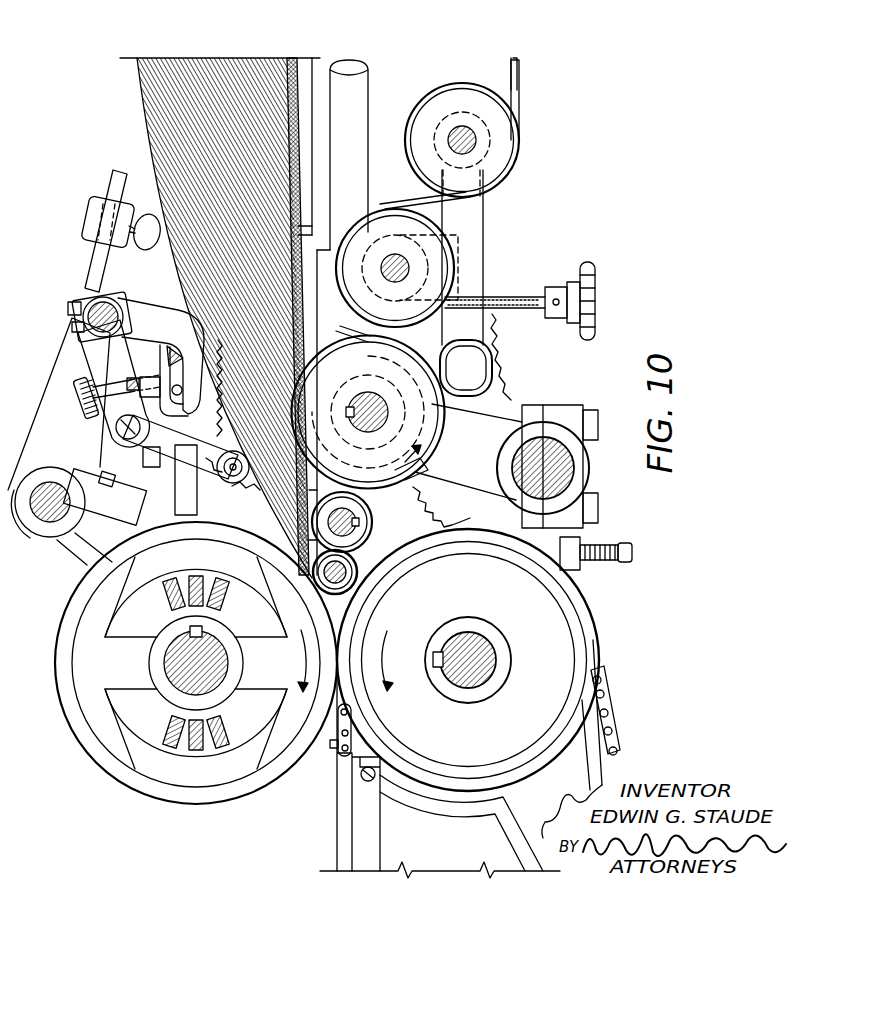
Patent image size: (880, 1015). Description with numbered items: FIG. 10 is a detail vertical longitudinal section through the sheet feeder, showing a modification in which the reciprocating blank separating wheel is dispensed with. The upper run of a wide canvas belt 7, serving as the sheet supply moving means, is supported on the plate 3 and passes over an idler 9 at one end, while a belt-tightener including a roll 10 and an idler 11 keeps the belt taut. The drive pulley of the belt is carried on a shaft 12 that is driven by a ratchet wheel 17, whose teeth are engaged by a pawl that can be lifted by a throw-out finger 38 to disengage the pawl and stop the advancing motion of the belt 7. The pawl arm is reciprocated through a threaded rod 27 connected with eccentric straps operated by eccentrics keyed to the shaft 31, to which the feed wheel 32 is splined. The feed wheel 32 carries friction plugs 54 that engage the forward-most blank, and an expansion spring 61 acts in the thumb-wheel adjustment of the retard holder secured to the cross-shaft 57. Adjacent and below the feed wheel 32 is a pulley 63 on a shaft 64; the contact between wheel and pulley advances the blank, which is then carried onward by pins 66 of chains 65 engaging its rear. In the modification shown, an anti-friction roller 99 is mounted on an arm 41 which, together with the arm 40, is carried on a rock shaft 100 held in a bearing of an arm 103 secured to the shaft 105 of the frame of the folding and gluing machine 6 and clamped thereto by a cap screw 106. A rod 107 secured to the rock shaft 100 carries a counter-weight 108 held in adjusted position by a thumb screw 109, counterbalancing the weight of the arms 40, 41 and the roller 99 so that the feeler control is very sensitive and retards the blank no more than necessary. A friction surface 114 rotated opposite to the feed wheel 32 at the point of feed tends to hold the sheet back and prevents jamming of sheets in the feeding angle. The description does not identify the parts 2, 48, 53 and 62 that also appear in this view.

The platen 2 is at (362, 104).
The plate 3 is at (298, 122).
The folding and gluing machine 6 is at (580, 452).
The canvas belt 7 is at (289, 56).
The idler 9 is at (358, 398).
The roll 10 is at (447, 146).
The idler 11 is at (386, 266).
The shaft 12 is at (372, 408).
The ratchet wheel 17 is at (504, 384).
The threaded rod 27 is at (184, 505).
The shaft 31 is at (196, 660).
The feed wheel 32 is at (263, 778).
The throw-out finger 38 is at (156, 320).
The arm 40 is at (105, 368).
The arm 41 is at (180, 447).
The spring 48 is at (76, 392).
The paper web 53 is at (140, 100).
The friction plugs 54 is at (235, 803).
The cross-shaft 57 is at (354, 513).
The expansion spring 61 is at (308, 506).
The hook 62 is at (165, 388).
The pulley 63 is at (581, 621).
The shaft 64 is at (478, 640).
The chains 65 is at (607, 709).
The pins 66 is at (340, 746).
The anti-friction roller 99 is at (225, 476).
The rock shaft 100 is at (82, 314).
The arm 103 is at (52, 412).
The shaft 105 is at (38, 510).
The cap screws 106 is at (118, 480).
The rod 107 is at (92, 276).
The counter-weight 108 is at (92, 214).
The thumb screw 109 is at (345, 576).
The friction surface 114 is at (323, 590).